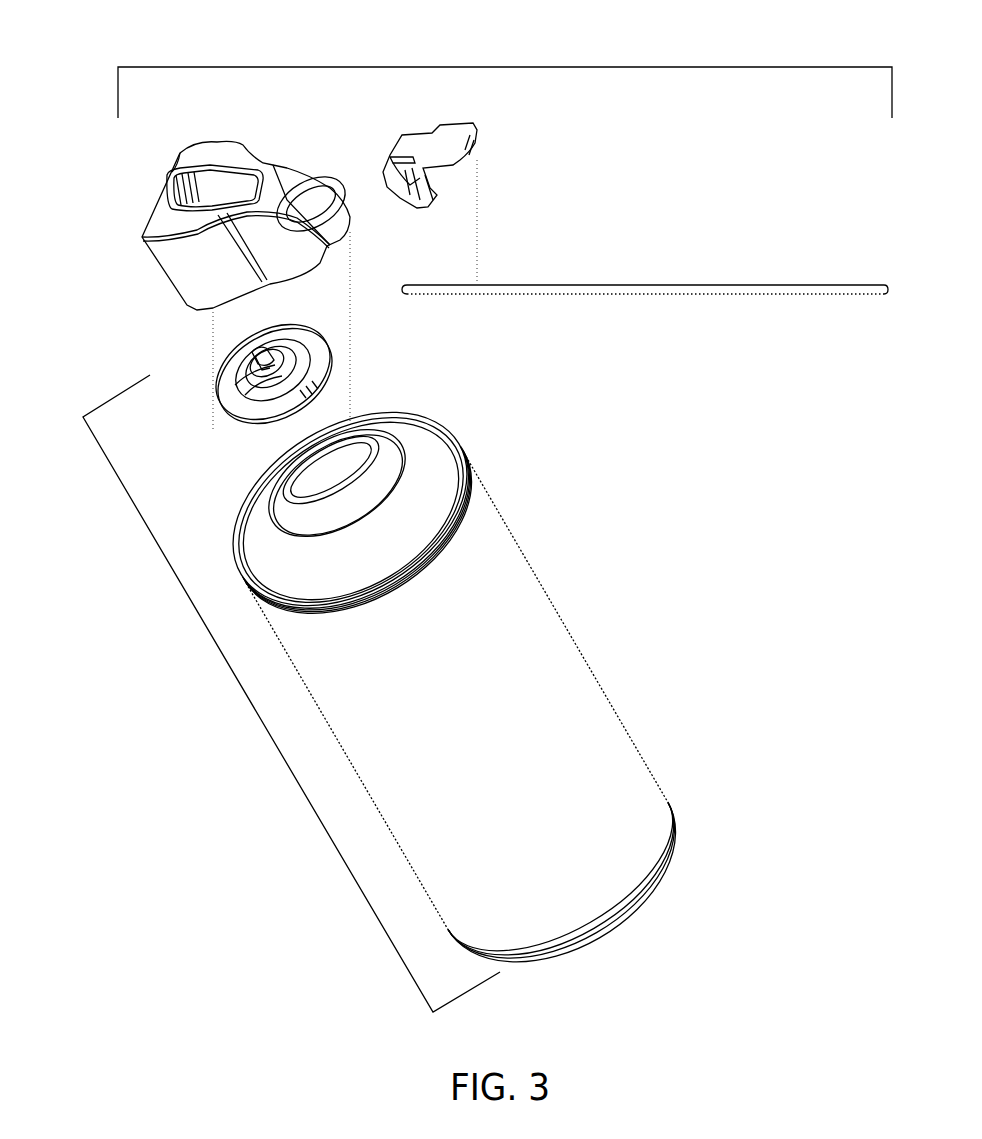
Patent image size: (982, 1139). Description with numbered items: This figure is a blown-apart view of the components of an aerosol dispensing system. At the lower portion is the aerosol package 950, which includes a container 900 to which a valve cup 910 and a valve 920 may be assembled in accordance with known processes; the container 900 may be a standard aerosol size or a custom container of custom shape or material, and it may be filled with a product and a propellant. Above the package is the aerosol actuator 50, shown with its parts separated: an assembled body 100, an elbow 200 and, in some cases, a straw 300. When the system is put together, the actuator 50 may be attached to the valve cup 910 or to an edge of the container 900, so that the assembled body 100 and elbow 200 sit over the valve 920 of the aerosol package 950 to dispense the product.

The aerosol actuator 50 is at (506, 67).
The assembled body 100 is at (132, 292).
The elbow 200 is at (500, 168).
The straw 300 is at (780, 292).
The container 900 is at (492, 705).
The valve cup 910 is at (323, 377).
The valve 920 is at (262, 352).
The aerosol package 950 is at (267, 732).